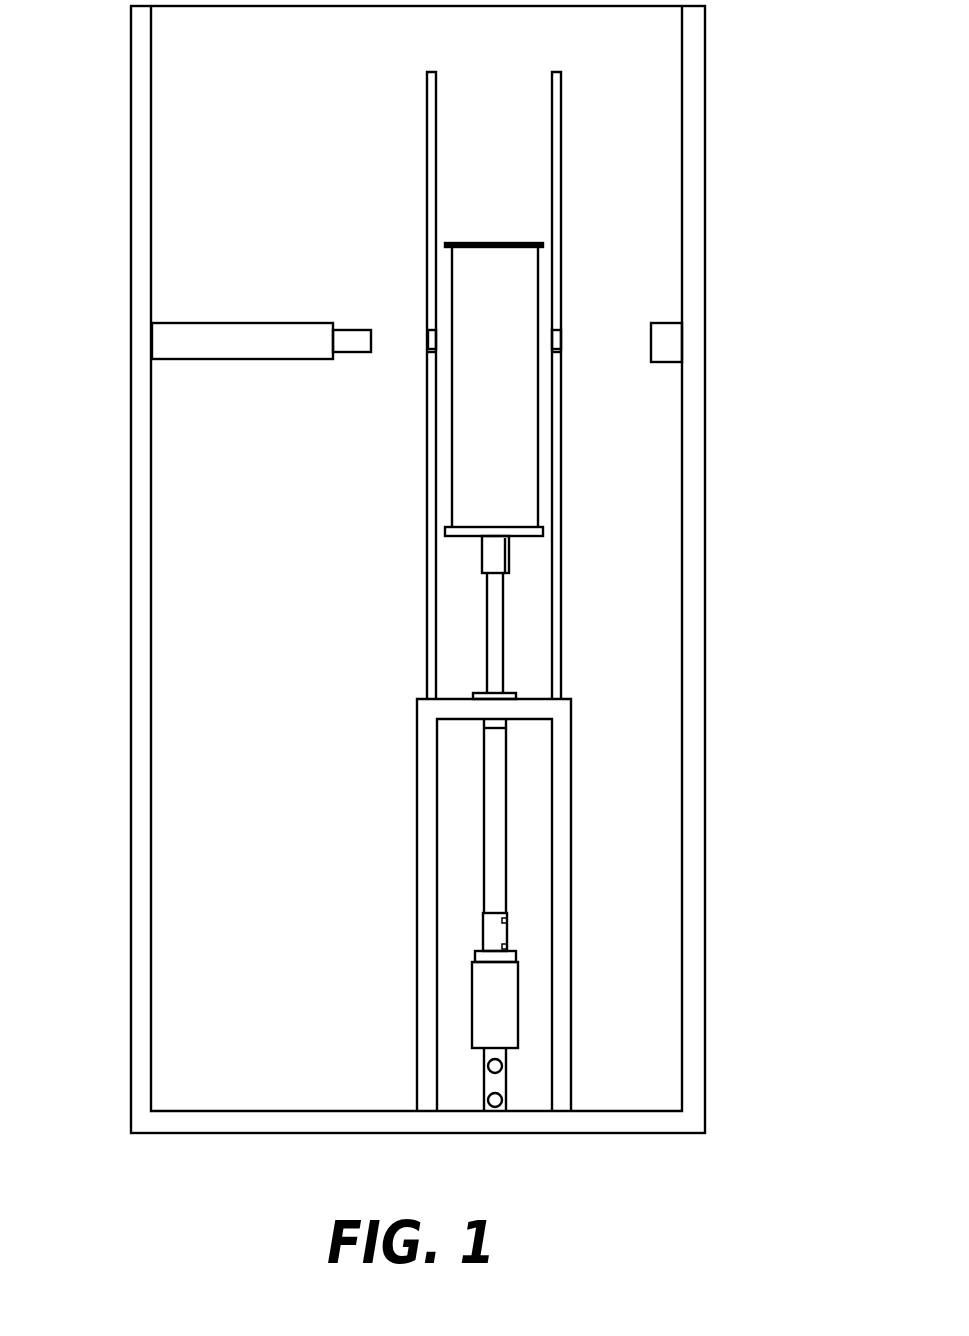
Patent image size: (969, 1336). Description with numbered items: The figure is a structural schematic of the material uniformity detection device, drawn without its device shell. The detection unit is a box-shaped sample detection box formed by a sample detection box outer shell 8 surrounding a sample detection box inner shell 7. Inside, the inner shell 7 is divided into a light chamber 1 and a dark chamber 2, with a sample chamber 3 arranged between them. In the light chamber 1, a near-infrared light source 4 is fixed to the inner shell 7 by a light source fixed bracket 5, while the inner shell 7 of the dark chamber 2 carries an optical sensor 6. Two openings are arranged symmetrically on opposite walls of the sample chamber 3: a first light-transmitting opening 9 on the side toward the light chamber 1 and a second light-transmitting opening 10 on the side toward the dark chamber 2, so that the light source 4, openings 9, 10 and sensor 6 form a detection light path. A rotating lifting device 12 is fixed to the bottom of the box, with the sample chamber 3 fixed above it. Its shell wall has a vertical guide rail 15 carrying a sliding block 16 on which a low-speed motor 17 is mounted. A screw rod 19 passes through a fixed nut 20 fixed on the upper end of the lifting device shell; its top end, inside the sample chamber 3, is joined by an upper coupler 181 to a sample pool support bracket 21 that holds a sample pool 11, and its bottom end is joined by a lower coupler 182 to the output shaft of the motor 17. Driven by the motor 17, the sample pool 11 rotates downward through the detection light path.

The light chamber 1 is at (242, 55).
The dark chamber 2 is at (643, 116).
The sample chamber 3 is at (563, 173).
The near-infrared light source 4 is at (342, 362).
The light source fixed bracket 5 is at (183, 340).
The optical sensor 6 is at (673, 322).
The sample detection box inner shell 7 is at (686, 408).
The sample detection box outer shell 8 is at (708, 452).
The first light-transmitting opening 9 is at (424, 338).
The second light-transmitting opening 10 is at (566, 338).
The sample pool 11 is at (534, 460).
The rotating lifting device 12 is at (576, 700).
The guide rail 15 is at (508, 1099).
The sliding block 16 is at (519, 956).
The low-speed motor 17 is at (524, 1047).
The screw rod 19 is at (510, 797).
The fixed nut 20 is at (473, 692).
The sample pool support bracket 21 is at (442, 533).
The upper coupler 181 is at (480, 563).
The lower coupler 182 is at (512, 917).